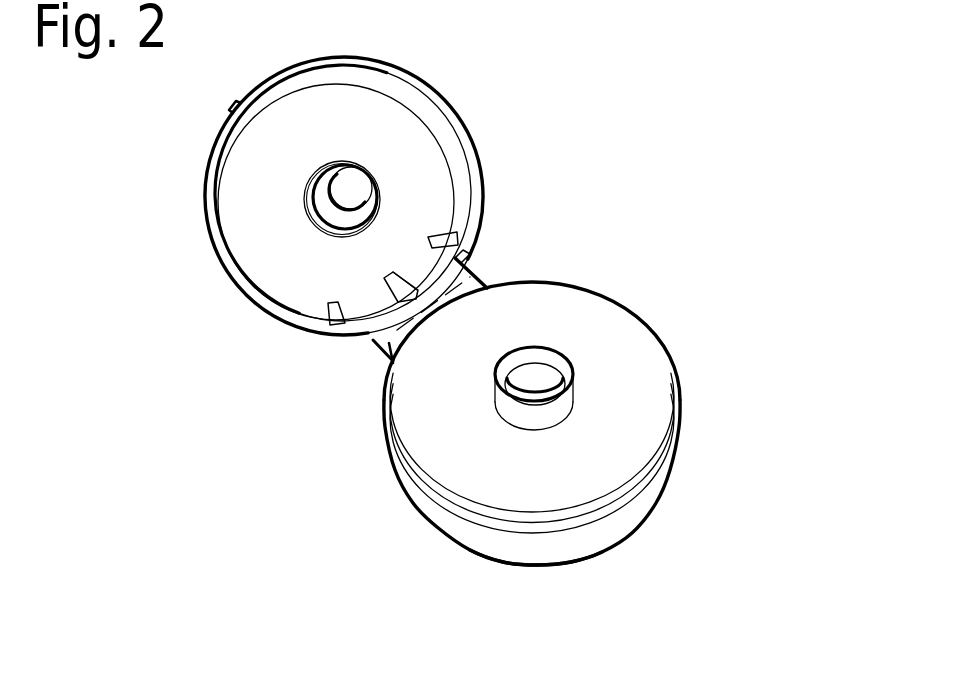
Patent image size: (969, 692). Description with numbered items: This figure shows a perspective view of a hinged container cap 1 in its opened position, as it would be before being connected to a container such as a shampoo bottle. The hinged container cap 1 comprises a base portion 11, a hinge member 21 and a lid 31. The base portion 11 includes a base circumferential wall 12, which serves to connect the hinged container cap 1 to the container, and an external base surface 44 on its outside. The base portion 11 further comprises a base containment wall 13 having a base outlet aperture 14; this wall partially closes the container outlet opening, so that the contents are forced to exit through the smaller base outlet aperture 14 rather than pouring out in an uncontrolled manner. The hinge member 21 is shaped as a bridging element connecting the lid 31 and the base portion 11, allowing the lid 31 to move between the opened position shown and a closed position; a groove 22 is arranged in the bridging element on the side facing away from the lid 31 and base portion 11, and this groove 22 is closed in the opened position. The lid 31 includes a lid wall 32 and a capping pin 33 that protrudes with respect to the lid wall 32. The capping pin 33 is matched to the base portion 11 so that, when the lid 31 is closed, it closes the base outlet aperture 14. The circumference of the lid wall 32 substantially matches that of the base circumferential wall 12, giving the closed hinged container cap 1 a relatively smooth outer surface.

The hinged container cap 1 is at (543, 168).
The base portion 11 is at (702, 458).
The base circumferential wall 12 is at (492, 540).
The base containment wall 13 is at (604, 335).
The base outlet aperture 14 is at (535, 390).
The hinge member 21 is at (380, 345).
The groove 22 is at (390, 358).
The lid 31 is at (184, 193).
The lid wall 32 is at (249, 242).
The capping pin 33 is at (358, 183).
The external base surface 44 is at (660, 452).